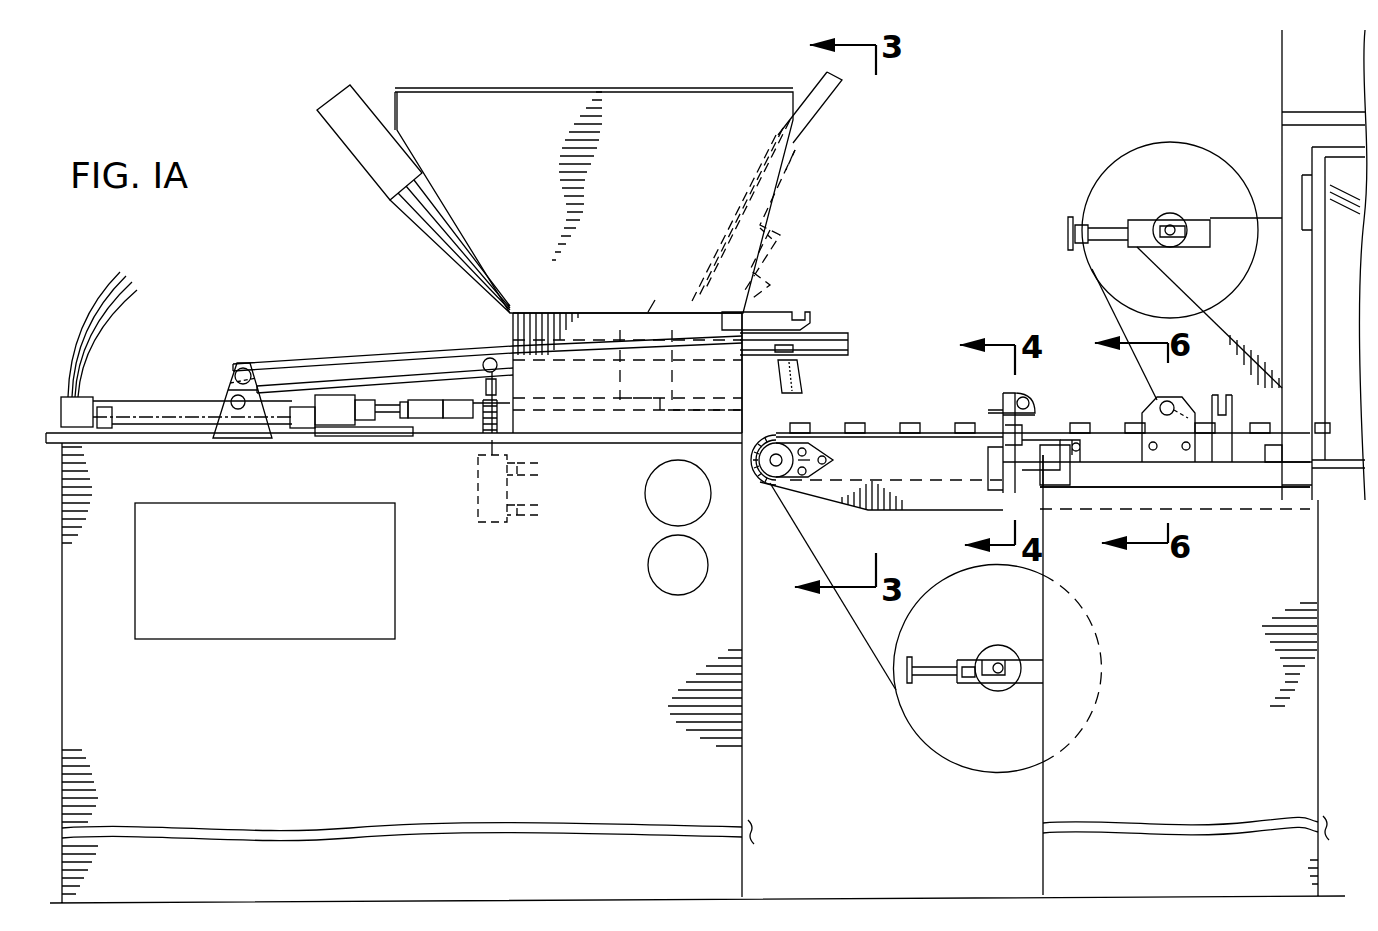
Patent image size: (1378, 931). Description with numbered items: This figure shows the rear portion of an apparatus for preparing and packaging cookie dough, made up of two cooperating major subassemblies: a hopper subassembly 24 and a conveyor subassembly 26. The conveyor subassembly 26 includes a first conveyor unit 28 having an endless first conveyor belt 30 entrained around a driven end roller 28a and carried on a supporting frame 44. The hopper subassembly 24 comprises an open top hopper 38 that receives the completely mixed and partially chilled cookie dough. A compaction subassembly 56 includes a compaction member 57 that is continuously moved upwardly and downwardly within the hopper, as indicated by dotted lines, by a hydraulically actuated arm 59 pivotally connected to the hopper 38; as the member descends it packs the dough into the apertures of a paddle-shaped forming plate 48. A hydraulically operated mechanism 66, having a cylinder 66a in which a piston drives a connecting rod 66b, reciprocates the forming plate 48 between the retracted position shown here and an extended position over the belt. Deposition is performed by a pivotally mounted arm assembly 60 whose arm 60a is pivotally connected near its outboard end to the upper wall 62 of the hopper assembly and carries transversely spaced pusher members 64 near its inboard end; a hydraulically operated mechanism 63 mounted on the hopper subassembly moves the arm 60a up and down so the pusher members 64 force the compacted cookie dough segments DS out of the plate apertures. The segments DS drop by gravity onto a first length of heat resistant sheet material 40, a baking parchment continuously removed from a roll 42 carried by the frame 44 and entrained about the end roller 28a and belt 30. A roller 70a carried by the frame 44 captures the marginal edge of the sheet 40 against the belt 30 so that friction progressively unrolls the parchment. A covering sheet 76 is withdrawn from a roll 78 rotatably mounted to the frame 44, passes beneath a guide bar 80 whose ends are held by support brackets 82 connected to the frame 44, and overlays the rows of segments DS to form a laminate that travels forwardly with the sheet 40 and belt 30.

The hopper subassembly 24 is at (440, 297).
The conveyor subassembly 26 is at (1255, 135).
The first conveyor unit 28 is at (877, 398).
The end roller 28a is at (768, 488).
The first conveyor belt 30 is at (918, 425).
The hopper 38 is at (532, 120).
The first length of heat resistant sheet material 40 is at (858, 635).
The roll of parchment material 42 is at (955, 735).
The supporting frame 44 is at (1242, 510).
The forming plate 48 is at (468, 410).
The compaction subassembly 56 is at (725, 195).
The compaction member 57 is at (648, 312).
The hydraulically actuated arm 59 is at (755, 237).
The arm assembly 60 is at (325, 352).
The arm 60a is at (830, 333).
The upper wall 62 is at (240, 440).
The hydraulically operated mechanism 63 is at (512, 455).
The pusher members 64 is at (800, 378).
The hydraulically operated mechanism 66 is at (128, 395).
The cylinder 66a is at (150, 410).
The connecting rod 66b is at (390, 430).
The roller 70a is at (1012, 400).
The covering sheet 76 is at (1108, 318).
The roll of covering material 78 is at (1110, 155).
The guide bar 80 is at (1167, 408).
The support brackets 82 is at (1142, 443).
The cookie dough segments DS is at (858, 437).